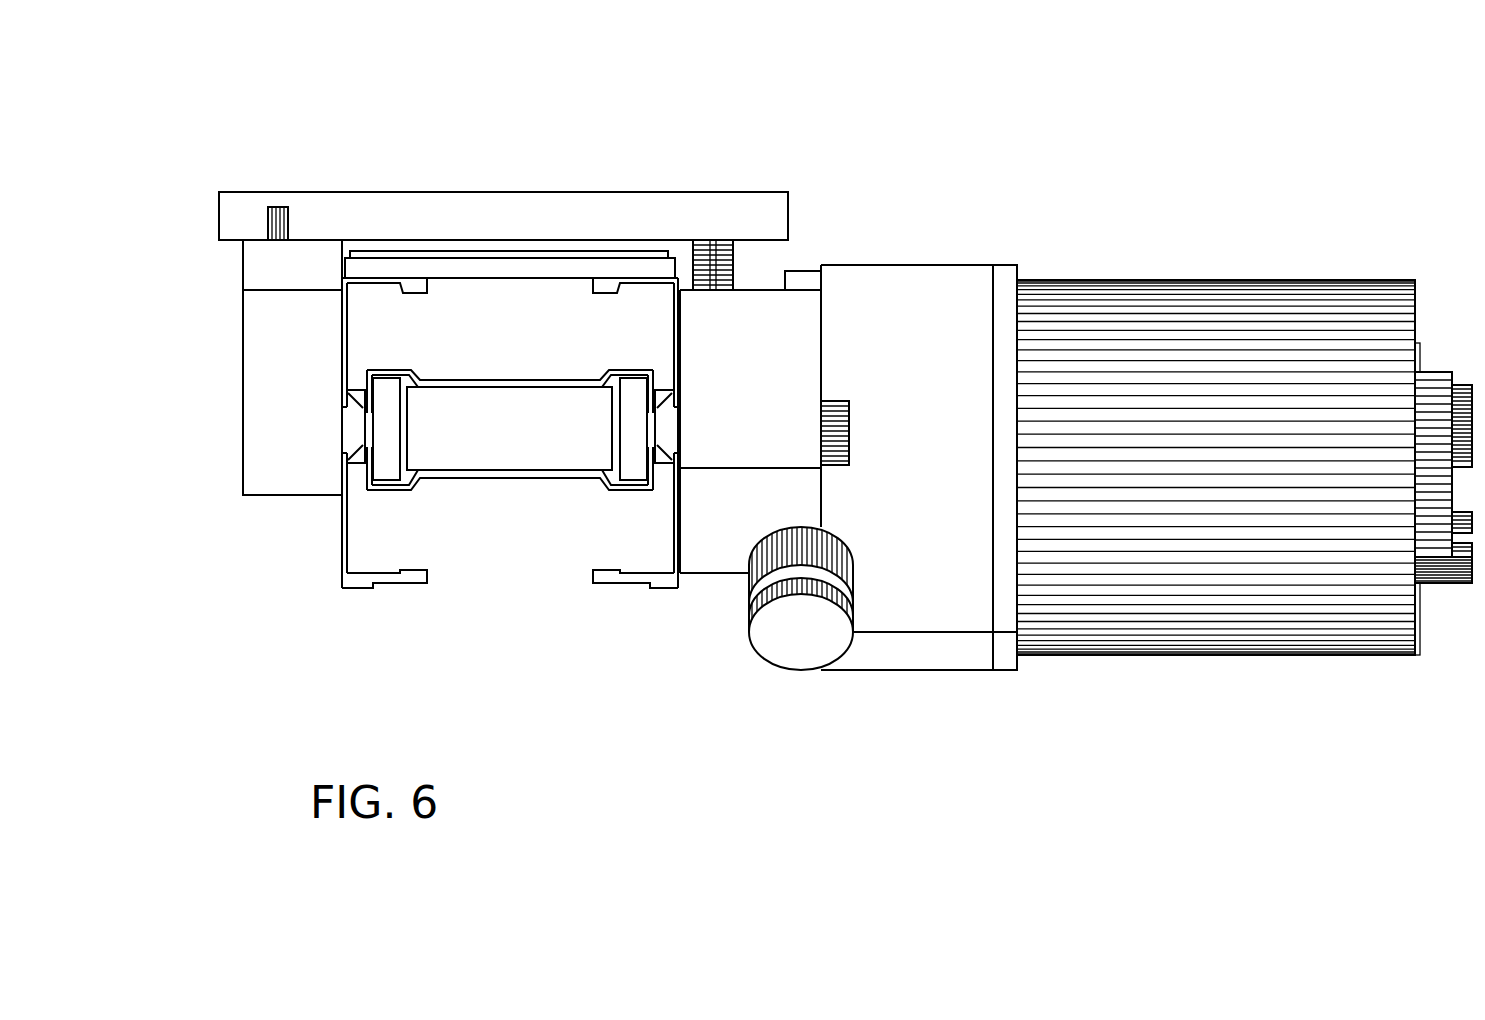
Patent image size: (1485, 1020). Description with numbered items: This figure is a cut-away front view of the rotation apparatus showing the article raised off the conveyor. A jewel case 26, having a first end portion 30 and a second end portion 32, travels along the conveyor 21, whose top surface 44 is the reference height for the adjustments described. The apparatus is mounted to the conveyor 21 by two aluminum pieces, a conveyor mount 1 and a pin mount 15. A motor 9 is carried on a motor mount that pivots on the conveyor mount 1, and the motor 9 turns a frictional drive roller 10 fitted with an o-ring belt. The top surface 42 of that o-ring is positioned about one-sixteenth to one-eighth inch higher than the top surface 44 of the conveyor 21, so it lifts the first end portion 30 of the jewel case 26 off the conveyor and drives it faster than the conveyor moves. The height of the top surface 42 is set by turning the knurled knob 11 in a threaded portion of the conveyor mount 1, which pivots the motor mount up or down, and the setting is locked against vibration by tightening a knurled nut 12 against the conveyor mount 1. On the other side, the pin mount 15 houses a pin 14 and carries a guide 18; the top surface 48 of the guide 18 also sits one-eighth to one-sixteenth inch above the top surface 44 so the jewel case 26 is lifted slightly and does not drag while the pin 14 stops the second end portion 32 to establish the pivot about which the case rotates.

The conveyor mount 1 is at (782, 369).
The motor 9 is at (950, 570).
The frictional drive roller 10 is at (734, 269).
The knurled knob 11 is at (807, 633).
The knurled nut 12 is at (770, 544).
The pin 14 is at (277, 207).
The pin mount 15 is at (300, 470).
The guide 18 is at (265, 262).
The conveyor 21 is at (582, 268).
The jewel case 26 is at (660, 207).
The first end portion 30 is at (779, 230).
The second end portion 32 is at (260, 230).
The top surface of the o-ring belt 42 is at (712, 237).
The top surface of the conveyor 44 is at (478, 255).
The top surface of the guide 48 is at (326, 238).